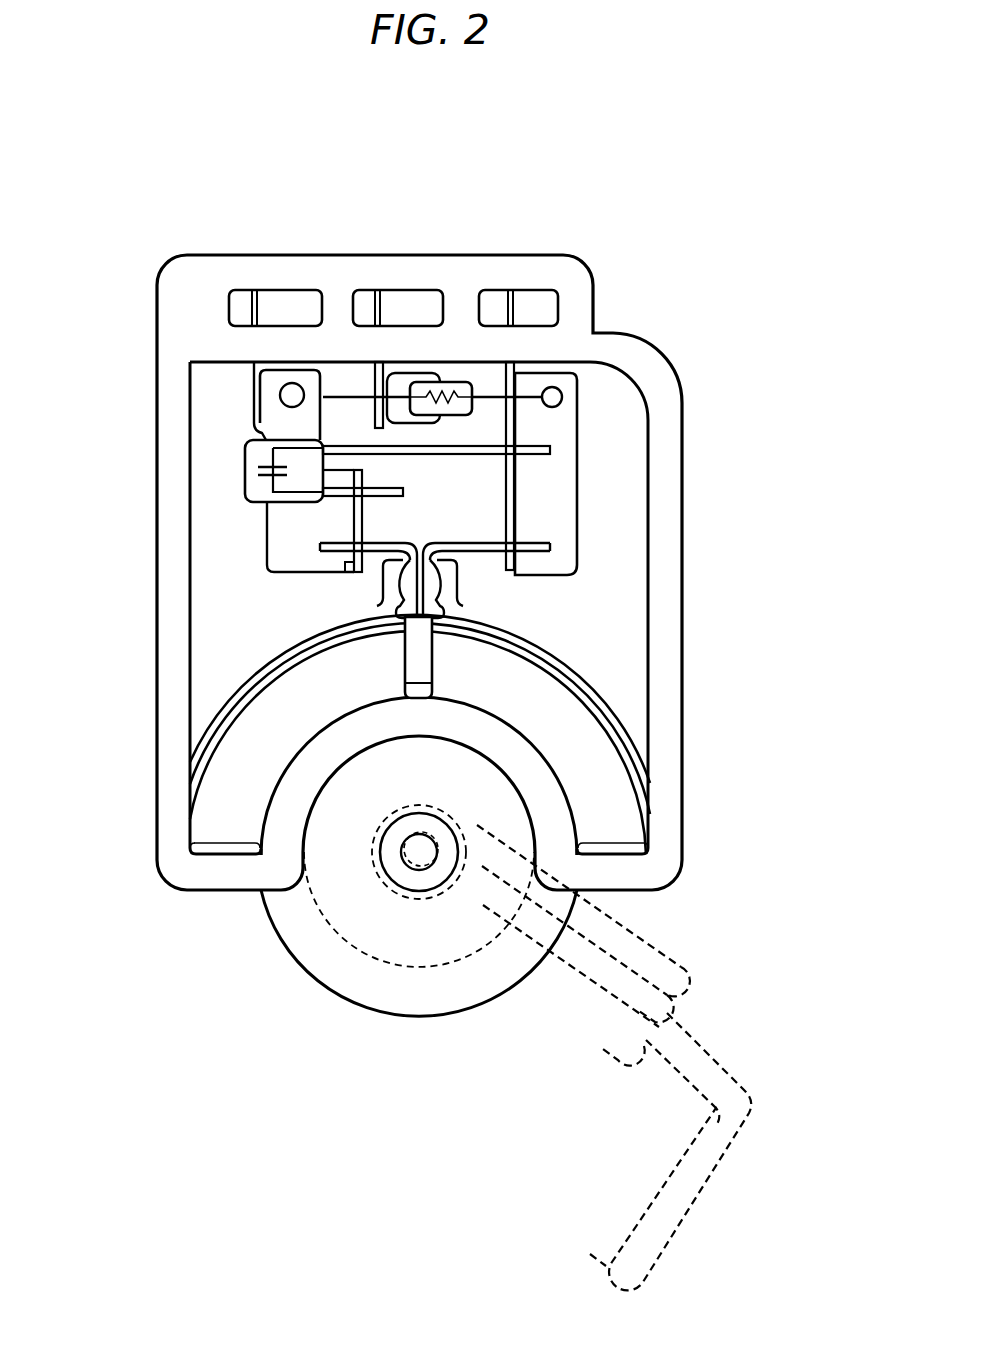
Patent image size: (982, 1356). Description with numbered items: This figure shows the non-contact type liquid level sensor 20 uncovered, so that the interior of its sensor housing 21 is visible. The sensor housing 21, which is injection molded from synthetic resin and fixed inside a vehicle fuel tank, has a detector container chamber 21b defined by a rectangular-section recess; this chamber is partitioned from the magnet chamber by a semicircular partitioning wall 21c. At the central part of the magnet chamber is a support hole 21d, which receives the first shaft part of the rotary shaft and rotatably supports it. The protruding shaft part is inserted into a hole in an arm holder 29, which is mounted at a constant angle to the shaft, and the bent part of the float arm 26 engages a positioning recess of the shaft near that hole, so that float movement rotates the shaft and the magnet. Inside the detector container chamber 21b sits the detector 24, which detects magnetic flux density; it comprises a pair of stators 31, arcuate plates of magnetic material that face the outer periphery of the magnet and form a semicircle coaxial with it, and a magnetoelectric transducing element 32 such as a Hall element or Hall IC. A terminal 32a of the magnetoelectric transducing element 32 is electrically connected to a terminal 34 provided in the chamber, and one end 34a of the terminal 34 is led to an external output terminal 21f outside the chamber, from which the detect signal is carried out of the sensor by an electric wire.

The non-contact type liquid level sensor 20 is at (637, 212).
The sensor housing 21 is at (683, 498).
The detector container chamber 21b is at (612, 457).
The semicircular partitioning wall 21c is at (530, 775).
The support hole 21d is at (424, 869).
The external output terminal 21f is at (536, 307).
The detector 24 is at (372, 597).
The float arm 26 is at (703, 1047).
The arm holder 29 is at (586, 1015).
The stators 31 is at (313, 662).
The magnetoelectric transducing element 32 is at (417, 657).
The terminal of the magnetoelectric transducing element 32a is at (337, 545).
The terminal 34 is at (253, 392).
The one end of the terminal 34a is at (383, 315).